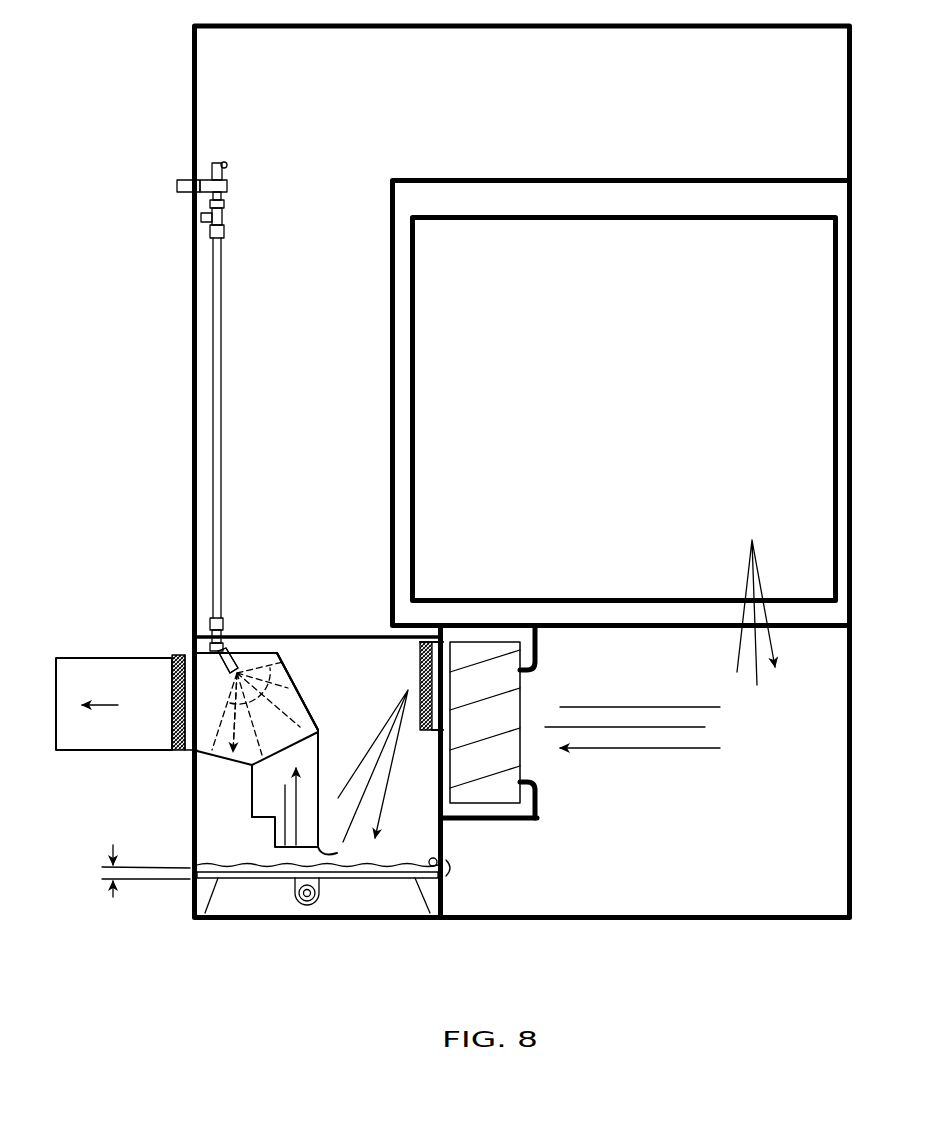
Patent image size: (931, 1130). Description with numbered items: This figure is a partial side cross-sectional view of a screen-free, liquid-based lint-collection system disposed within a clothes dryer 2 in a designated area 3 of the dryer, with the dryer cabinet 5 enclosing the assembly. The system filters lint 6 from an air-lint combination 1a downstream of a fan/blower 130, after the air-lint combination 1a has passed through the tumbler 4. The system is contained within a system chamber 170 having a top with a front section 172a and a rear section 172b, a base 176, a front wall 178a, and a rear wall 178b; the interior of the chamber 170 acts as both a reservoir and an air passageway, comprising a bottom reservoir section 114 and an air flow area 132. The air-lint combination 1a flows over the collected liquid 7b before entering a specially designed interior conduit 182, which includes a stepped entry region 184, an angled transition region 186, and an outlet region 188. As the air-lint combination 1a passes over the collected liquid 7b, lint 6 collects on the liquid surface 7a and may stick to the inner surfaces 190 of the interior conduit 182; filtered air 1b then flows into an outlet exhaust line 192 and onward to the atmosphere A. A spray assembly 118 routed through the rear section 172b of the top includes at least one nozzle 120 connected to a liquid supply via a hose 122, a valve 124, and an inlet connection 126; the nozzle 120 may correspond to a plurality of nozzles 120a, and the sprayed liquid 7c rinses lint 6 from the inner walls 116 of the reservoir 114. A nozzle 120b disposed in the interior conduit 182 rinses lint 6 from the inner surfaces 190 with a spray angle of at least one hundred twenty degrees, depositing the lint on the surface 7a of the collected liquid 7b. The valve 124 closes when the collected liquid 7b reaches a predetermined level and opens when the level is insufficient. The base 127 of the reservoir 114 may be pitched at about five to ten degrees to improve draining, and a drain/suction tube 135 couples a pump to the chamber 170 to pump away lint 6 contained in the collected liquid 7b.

The clothes dryer 2 is at (103, 308).
The designated area 3 is at (300, 517).
The tumbler 4 is at (810, 215).
The cabinet 5 is at (190, 78).
The bottom reservoir section 114 is at (462, 867).
The inner walls 116 is at (445, 797).
The spray assembly 118 is at (210, 612).
The nozzle 120 is at (268, 680).
The plurality of nozzles 120a is at (440, 893).
The nozzle 120b is at (222, 656).
The hose 122 is at (222, 430).
The valve 124 is at (228, 188).
The inlet connection 126 is at (176, 180).
The base 127 is at (378, 880).
The fan/blower 130 is at (512, 800).
The air flow area 132 is at (345, 778).
The drain/suction tube 135 is at (322, 902).
The system chamber 170 is at (288, 632).
The front section 172a is at (317, 593).
The rear section 172b is at (200, 632).
The base 176 is at (240, 880).
The front wall 178a is at (448, 838).
The rear wall 178b is at (190, 803).
The interior conduit 182 is at (288, 667).
The stepped entry region 184 is at (252, 836).
The angled transition region 186 is at (298, 735).
The outlet region 188 is at (182, 655).
The inner surfaces 190 is at (290, 705).
The outlet exhaust line 192 is at (80, 652).
The air-lint combination 1a is at (556, 677).
The filtered air 1b is at (201, 768).
The lint 6 is at (302, 757).
The surface of the collected liquid 7a is at (392, 853).
The collected liquid 7b is at (258, 873).
The sprayed liquid 7c is at (208, 730).
The atmosphere A is at (23, 704).